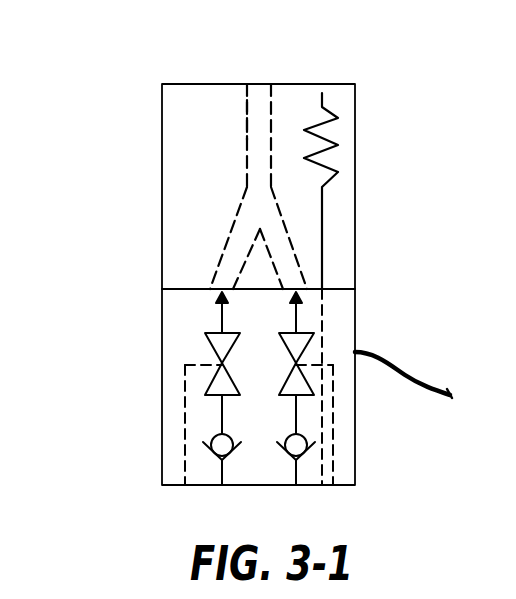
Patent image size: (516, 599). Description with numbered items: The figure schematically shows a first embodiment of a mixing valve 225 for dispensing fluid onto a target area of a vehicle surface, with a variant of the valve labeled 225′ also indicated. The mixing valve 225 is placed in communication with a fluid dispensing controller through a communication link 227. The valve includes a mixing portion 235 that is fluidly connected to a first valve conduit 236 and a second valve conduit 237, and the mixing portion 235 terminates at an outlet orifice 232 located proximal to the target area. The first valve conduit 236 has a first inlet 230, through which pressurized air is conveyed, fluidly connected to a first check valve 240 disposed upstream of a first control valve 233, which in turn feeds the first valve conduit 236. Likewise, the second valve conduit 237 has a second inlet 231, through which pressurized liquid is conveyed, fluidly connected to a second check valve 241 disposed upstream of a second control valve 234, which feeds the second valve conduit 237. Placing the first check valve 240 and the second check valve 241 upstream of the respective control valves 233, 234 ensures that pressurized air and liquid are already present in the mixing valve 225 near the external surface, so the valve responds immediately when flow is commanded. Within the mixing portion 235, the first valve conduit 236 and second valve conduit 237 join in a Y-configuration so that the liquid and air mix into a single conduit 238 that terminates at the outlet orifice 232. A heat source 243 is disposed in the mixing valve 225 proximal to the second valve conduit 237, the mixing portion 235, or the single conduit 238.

The mixing valve 225 is at (143, 123).
The hydraulic control valve assembly (alternate) 225′ is at (514, 522).
The communication link 227 is at (402, 370).
The first inlet 230 is at (220, 486).
The second inlet 231 is at (298, 486).
The outlet orifice 232 is at (259, 84).
The first control valve 233 is at (210, 378).
The second control valve 234 is at (305, 378).
The mixing portion 235 is at (192, 192).
The first valve conduit 236 is at (229, 262).
The second valve conduit 237 is at (283, 262).
The single conduit 238 is at (257, 138).
The first check valve 240 is at (205, 462).
The second check valve 241 is at (310, 463).
The heat source 243 is at (337, 137).